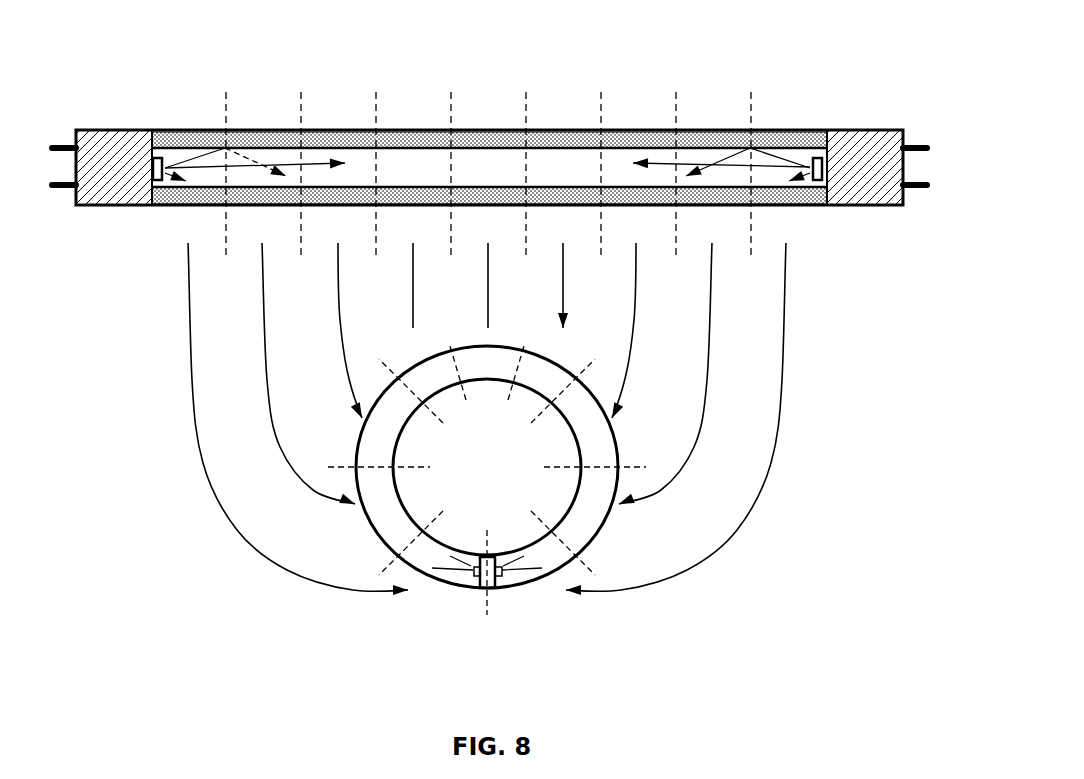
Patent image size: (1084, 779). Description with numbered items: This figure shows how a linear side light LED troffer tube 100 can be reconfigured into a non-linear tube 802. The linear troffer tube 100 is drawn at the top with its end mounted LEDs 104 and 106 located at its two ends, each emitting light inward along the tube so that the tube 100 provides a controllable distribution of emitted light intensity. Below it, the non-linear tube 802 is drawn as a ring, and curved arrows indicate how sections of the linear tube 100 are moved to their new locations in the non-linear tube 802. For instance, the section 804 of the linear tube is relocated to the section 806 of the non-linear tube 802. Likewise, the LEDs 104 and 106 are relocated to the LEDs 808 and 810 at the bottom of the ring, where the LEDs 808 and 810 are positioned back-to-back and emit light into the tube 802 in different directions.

The side light LED troffer tube 100 is at (860, 58).
The end mounted LED 104 is at (156, 158).
The end mounted LED 106 is at (822, 160).
The non-linear tube 802 is at (830, 364).
The section 804 is at (401, 98).
The section 806 is at (447, 406).
The LED 808 is at (477, 586).
The LED 810 is at (498, 587).